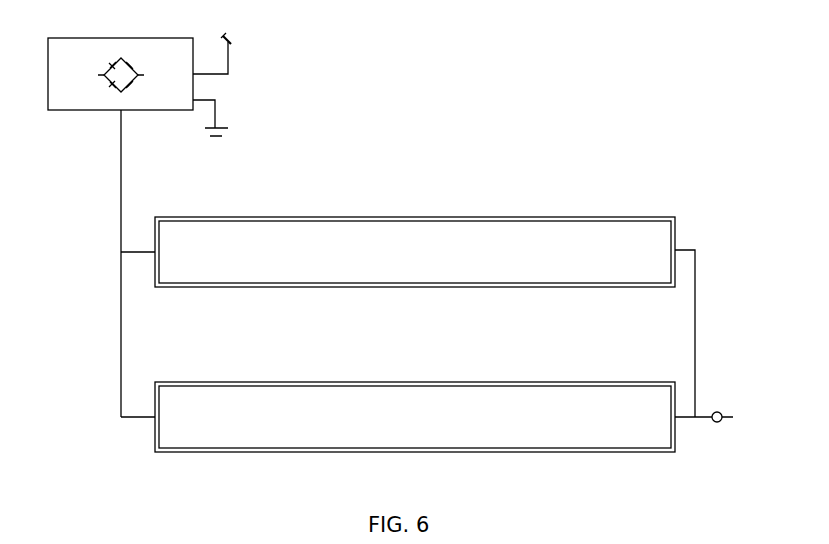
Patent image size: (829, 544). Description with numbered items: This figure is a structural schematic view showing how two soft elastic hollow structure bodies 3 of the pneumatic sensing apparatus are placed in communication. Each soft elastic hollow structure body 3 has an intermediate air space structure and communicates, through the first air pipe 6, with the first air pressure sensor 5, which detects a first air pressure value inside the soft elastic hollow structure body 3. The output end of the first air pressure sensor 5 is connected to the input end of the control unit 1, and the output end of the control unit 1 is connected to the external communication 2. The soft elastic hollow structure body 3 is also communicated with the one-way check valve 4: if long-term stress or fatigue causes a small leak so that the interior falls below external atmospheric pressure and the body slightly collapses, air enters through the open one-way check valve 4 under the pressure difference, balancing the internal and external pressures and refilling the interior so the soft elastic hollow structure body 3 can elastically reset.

The control unit 1 is at (175, 38).
The external communication 2 is at (233, 40).
The soft elastic hollow structure body 3 is at (573, 275).
The one-way check valve 4 is at (722, 421).
The first air pressure sensor 5 is at (107, 57).
The first air pipe 6 is at (125, 160).